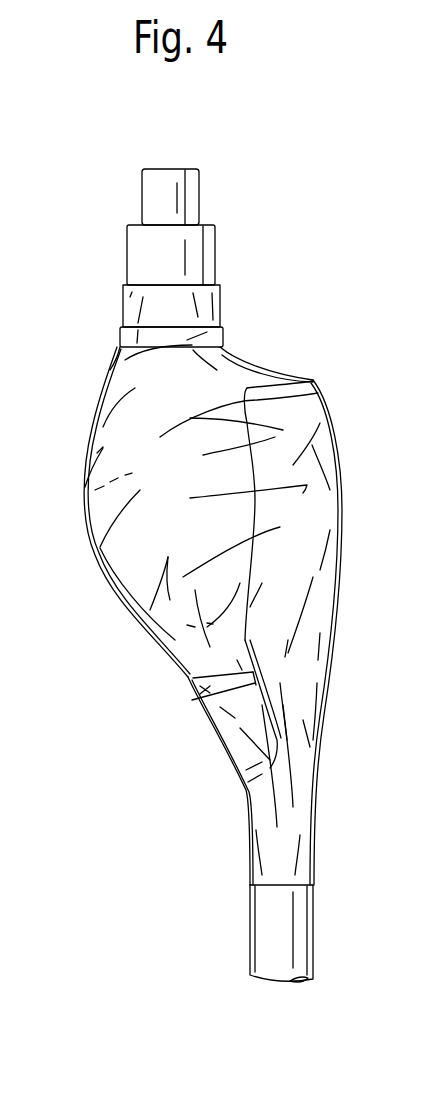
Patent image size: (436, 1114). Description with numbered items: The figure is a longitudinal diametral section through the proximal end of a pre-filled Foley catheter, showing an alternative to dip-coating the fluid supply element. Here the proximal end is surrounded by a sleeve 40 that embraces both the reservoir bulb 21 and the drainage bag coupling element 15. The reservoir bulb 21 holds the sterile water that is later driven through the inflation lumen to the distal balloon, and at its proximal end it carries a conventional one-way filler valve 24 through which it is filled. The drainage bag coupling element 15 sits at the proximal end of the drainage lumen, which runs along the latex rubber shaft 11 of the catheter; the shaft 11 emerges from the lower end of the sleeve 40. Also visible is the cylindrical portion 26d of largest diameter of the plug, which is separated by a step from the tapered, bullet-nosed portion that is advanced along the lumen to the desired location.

The one-way filler valve 24 is at (137, 240).
The sleeve 40 is at (262, 365).
The reservoir bulb 21 is at (85, 493).
The drainage bag coupling element 15 is at (298, 453).
The cylindrical portion 26d is at (190, 700).
The shaft 11 is at (263, 958).